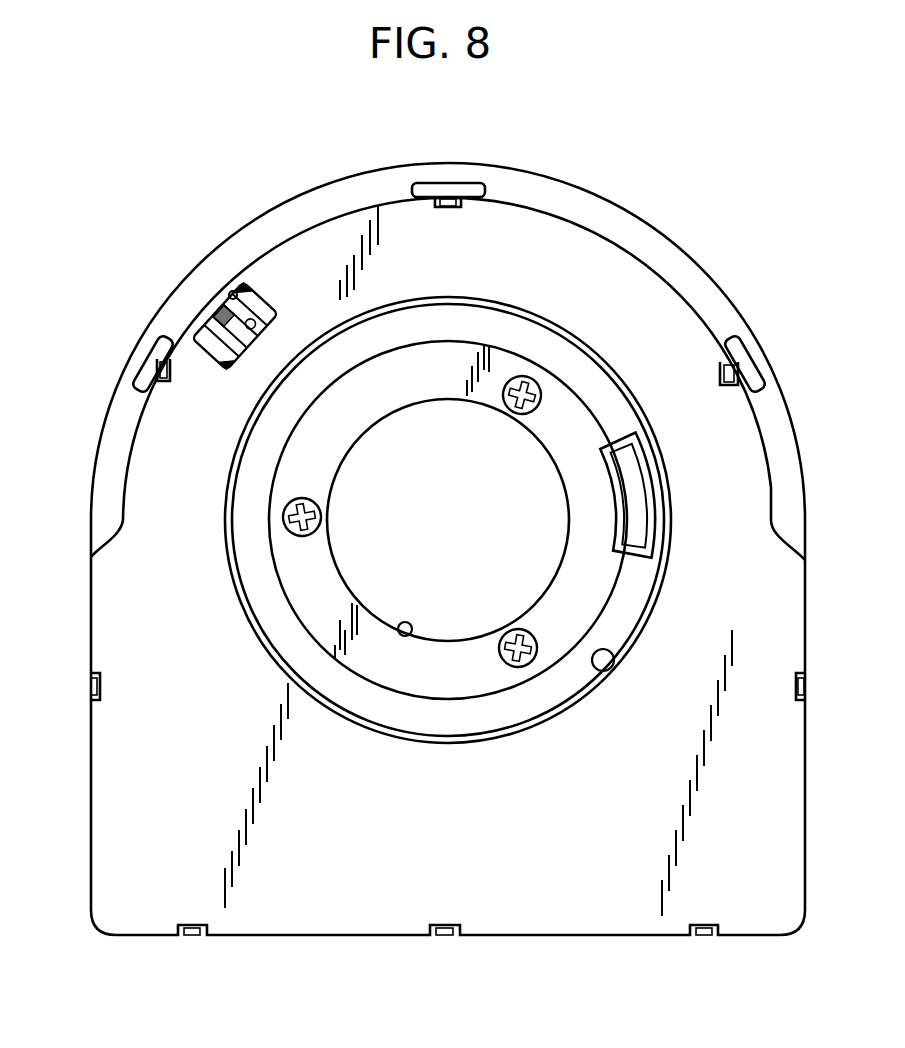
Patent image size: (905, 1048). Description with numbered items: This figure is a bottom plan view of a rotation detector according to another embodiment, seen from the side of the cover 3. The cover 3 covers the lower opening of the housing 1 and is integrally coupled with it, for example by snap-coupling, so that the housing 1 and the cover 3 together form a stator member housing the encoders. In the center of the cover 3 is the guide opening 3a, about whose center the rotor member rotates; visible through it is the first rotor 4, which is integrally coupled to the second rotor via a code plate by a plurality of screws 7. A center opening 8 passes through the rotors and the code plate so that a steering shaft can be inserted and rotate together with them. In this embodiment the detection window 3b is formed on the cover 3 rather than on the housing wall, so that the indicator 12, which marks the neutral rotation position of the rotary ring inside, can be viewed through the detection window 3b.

The housing 1 is at (106, 466).
The cover 3 is at (138, 817).
The guide opening 3a is at (603, 672).
The detection window 3b is at (233, 291).
The first rotor 4 is at (597, 583).
The screws 7 is at (543, 392).
The center opening 8 is at (410, 640).
The indicator 12 is at (226, 316).